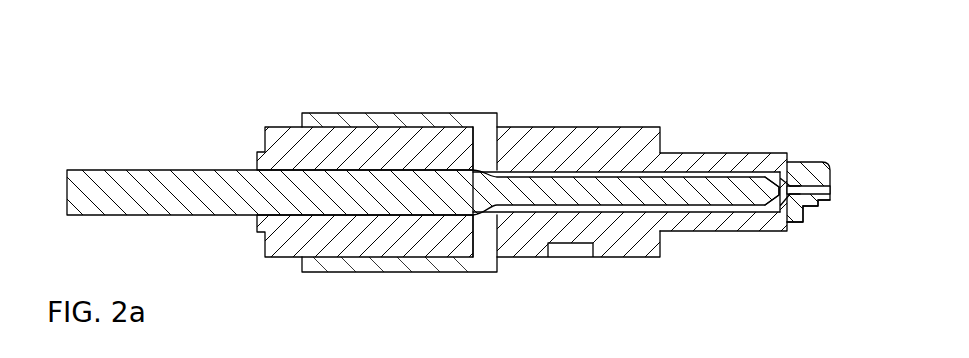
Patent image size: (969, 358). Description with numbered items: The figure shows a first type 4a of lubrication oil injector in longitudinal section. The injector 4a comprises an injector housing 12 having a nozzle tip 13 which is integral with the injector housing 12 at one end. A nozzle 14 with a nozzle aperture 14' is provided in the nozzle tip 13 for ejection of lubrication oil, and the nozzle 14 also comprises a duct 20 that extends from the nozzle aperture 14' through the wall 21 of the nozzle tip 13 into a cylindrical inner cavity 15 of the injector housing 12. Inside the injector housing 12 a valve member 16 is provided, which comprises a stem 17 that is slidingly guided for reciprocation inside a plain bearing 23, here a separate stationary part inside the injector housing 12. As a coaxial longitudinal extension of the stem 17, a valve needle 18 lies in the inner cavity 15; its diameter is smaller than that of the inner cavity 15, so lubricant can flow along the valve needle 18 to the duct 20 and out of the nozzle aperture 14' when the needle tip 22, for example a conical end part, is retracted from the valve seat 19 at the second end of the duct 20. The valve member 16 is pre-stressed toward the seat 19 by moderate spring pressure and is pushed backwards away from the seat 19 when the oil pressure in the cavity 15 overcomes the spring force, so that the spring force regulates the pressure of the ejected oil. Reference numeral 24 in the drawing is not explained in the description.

The first type of lubrication oil injector 4a is at (130, 99).
The injector housing 12 is at (578, 143).
The nozzle tip 13 is at (823, 140).
The nozzle 14 is at (829, 164).
The nozzle aperture 14' is at (835, 264).
The cylindrical inner cavity 15 is at (722, 212).
The valve member 16 is at (142, 165).
The stem 17 is at (243, 183).
The valve needle 18 is at (677, 195).
The valve seat 19 is at (788, 207).
The duct 20 is at (789, 189).
The wall of the nozzle tip 21 is at (806, 190).
The needle tip 22 is at (797, 203).
The plain bearing 23 is at (290, 145).
The lower sleeve portion 24 is at (373, 217).